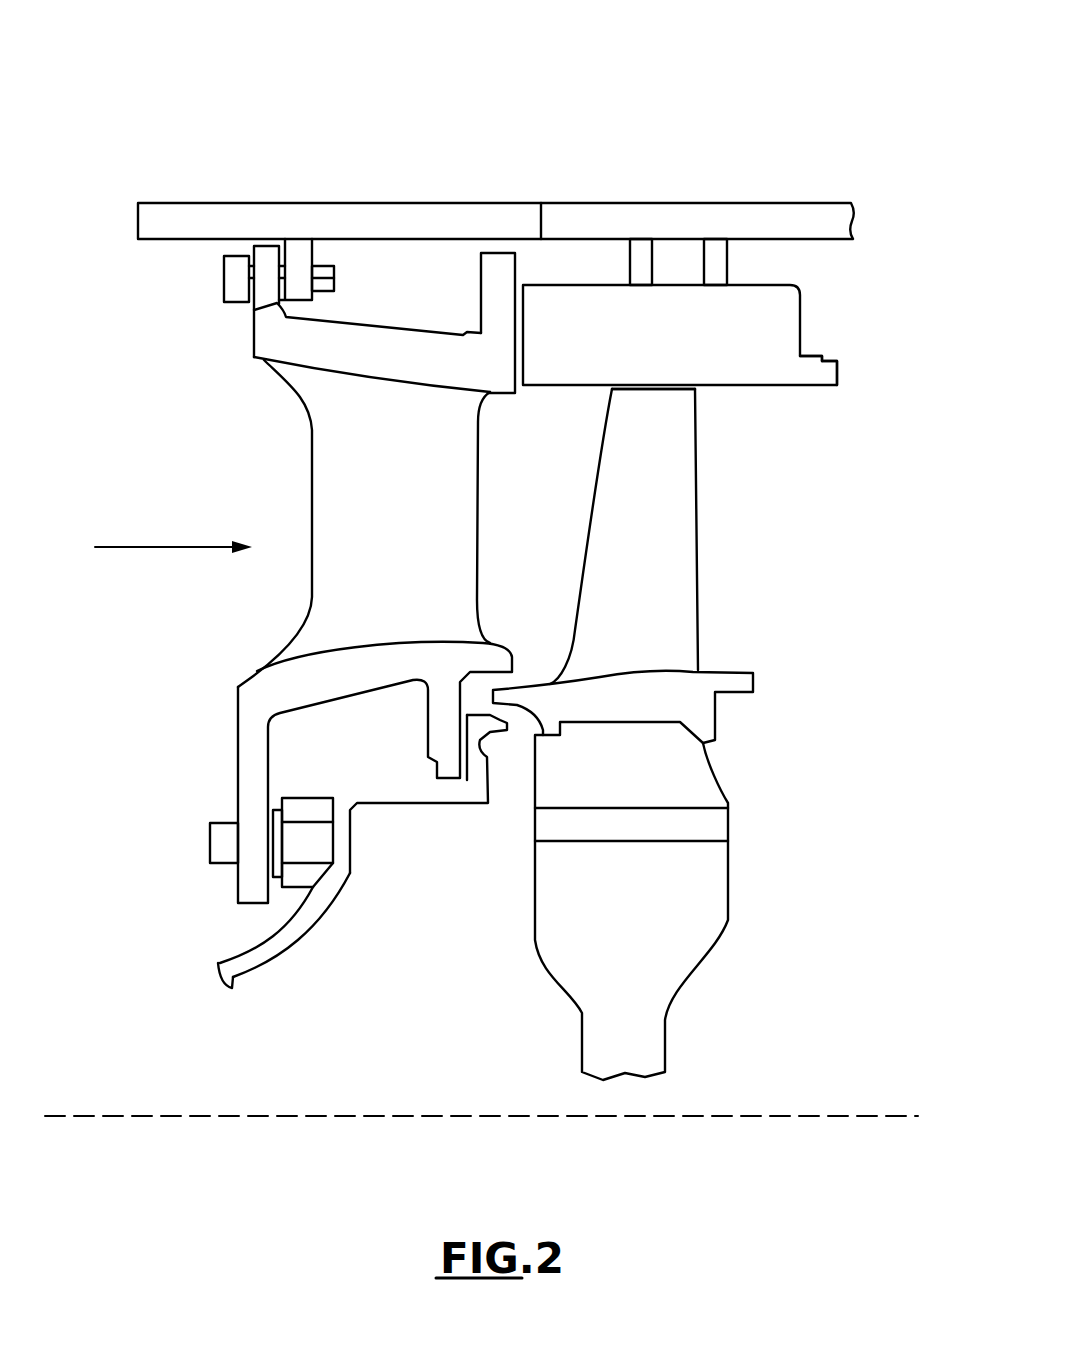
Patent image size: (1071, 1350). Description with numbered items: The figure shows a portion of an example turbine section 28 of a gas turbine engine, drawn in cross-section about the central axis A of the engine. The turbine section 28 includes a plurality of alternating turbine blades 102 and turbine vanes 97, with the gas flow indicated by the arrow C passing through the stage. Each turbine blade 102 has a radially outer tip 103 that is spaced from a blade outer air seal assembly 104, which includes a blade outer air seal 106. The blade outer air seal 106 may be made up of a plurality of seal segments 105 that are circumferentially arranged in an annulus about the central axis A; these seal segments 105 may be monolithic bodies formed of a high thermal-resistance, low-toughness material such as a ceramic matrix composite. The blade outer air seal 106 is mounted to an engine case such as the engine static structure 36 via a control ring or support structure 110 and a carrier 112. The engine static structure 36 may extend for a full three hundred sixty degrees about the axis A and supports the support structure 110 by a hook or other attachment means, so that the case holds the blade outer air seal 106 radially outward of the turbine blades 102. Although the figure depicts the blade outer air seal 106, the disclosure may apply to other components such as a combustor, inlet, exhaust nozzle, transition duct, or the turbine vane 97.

The turbine section 28 is at (776, 90).
The engine static structure 36 is at (203, 220).
The turbine vane 97 is at (483, 362).
The turbine blade 102 is at (688, 508).
The radially outer tip 103 is at (678, 390).
The blade outer air seal assembly 104 is at (850, 303).
The seal segment 105 is at (822, 358).
The blade outer air seal 106 is at (817, 374).
The support structure 110 is at (587, 215).
The carrier 112 is at (642, 265).
The central axis A is at (847, 1117).
The core flow path C is at (128, 546).